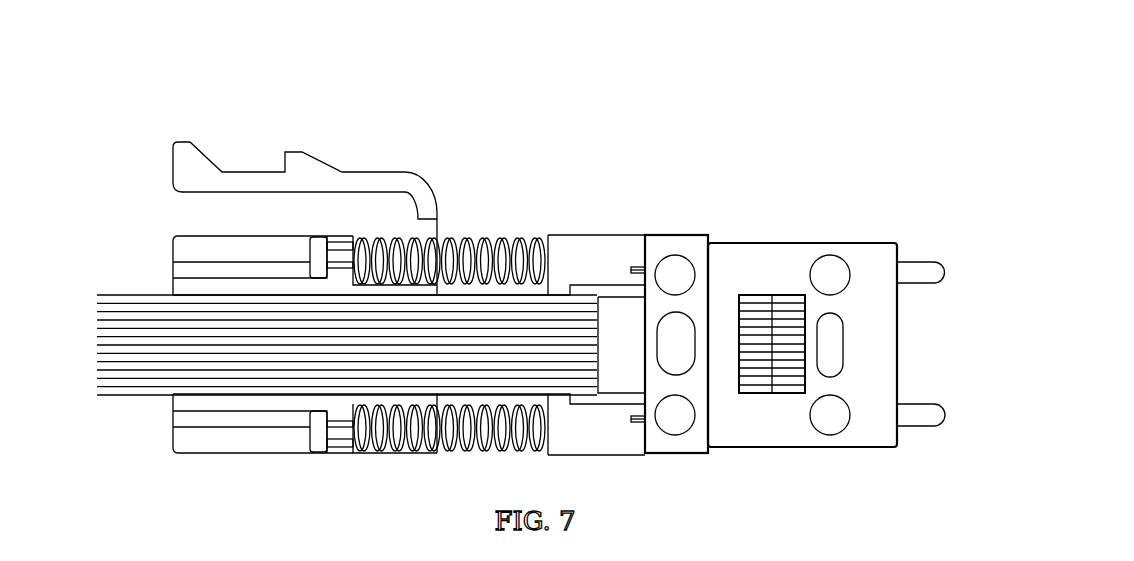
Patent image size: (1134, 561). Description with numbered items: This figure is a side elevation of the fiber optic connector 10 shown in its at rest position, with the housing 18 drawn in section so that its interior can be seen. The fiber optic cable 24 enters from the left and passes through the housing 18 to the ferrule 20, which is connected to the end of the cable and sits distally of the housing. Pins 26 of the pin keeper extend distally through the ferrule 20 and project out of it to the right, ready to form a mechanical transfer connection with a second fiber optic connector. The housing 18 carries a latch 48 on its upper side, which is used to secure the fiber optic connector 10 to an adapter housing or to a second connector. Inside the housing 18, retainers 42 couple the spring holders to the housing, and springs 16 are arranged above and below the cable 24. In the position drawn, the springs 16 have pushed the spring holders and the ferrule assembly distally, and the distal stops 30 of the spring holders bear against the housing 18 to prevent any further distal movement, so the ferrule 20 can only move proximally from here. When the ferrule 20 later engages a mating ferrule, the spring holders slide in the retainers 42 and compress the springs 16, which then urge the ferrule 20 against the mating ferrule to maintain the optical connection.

The fiber optic connector 10 is at (645, 131).
The springs 16 is at (491, 234).
The housing 18 is at (179, 460).
The ferrule 20 is at (803, 265).
The fiber optic cable 24 is at (122, 313).
The pins 26 is at (923, 413).
The distal stops 30 is at (318, 258).
The retainers 42 is at (354, 234).
The latch 48 is at (322, 180).